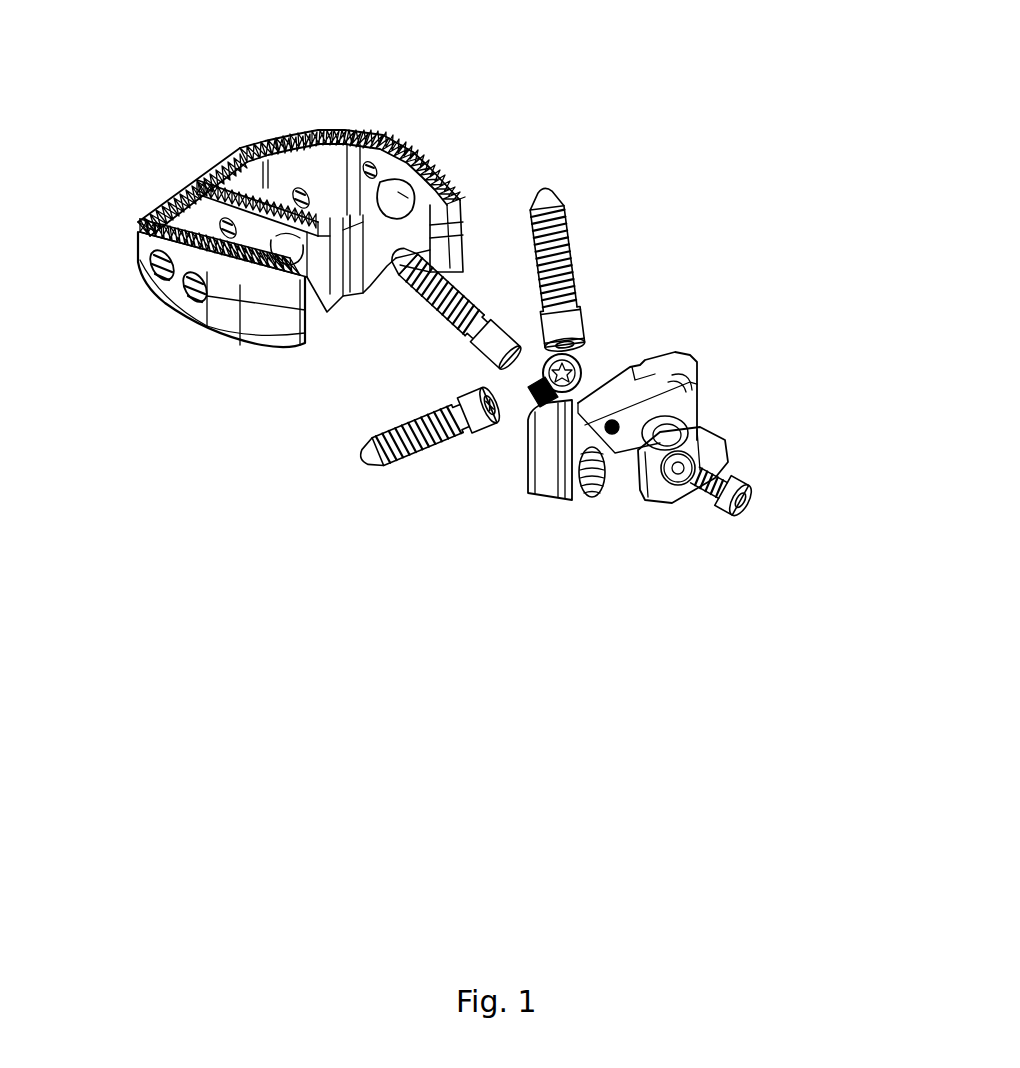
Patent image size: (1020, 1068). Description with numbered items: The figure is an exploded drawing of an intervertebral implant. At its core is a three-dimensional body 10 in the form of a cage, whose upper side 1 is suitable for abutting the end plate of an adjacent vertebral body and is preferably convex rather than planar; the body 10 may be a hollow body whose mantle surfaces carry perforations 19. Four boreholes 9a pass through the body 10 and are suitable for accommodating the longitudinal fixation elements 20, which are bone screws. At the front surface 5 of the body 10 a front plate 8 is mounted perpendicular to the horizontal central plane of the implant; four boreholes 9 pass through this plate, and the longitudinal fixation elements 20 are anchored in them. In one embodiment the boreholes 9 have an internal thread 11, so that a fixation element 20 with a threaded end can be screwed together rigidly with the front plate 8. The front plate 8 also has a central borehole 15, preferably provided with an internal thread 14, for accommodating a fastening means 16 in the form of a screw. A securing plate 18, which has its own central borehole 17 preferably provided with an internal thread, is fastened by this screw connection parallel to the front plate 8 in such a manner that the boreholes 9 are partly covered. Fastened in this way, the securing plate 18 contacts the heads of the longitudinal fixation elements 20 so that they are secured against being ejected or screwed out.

The upper side 1 is at (280, 341).
The front surface 5 is at (304, 343).
The front plate 8 is at (712, 420).
The boreholes 9 is at (597, 497).
The boreholes 9a is at (258, 185).
The three-dimensional body 10 is at (241, 409).
The internal thread 11 is at (578, 498).
The internal thread 14 is at (743, 309).
The central borehole 15 is at (682, 362).
The fastening means 16 is at (743, 498).
The central borehole 17 is at (703, 460).
The securing plate 18 is at (718, 447).
The perforations 19 is at (147, 280).
The longitudinal fixation elements 20 is at (580, 224).